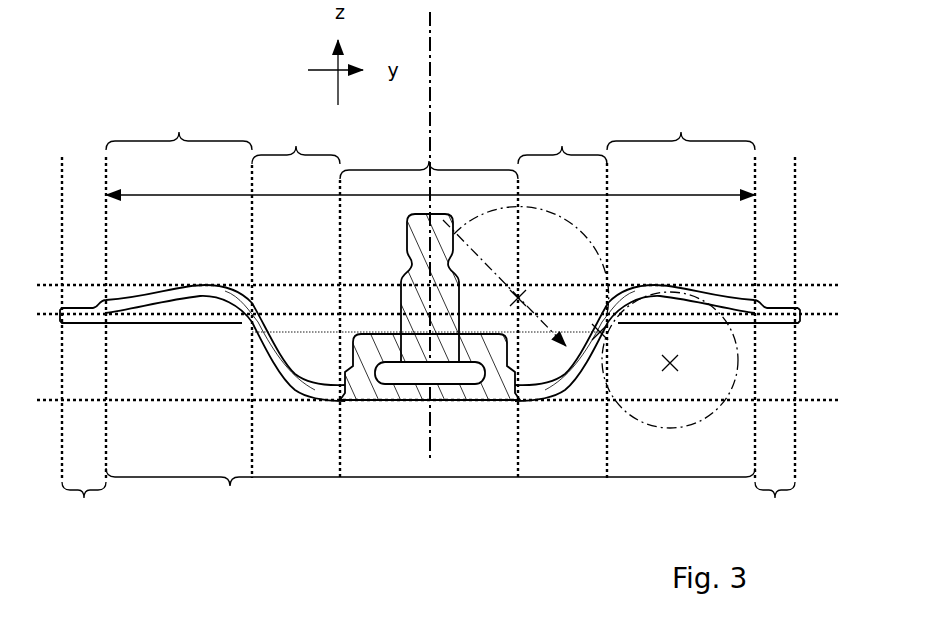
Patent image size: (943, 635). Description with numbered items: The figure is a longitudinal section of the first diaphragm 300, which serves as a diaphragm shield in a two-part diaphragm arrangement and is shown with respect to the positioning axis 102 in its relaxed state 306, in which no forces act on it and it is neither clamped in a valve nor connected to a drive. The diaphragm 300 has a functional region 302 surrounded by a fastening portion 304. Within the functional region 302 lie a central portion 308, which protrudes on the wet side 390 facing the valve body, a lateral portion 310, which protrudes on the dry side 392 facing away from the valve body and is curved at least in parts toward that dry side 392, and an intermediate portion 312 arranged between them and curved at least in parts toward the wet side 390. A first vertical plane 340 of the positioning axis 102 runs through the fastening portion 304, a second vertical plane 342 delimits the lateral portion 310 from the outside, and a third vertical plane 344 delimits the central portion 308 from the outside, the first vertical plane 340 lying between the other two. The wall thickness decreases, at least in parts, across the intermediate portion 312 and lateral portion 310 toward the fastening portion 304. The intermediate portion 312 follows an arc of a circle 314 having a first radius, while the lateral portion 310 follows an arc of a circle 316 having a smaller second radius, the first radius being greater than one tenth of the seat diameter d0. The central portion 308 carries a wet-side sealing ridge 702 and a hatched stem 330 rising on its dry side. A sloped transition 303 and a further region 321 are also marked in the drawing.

The first diaphragm 300 is at (112, 88).
The positioning axis 102 is at (432, 66).
The functional region 302 is at (430, 497).
The membrane slope portion 303 is at (228, 333).
The fastening portion 304 is at (428, 510).
The relaxed state 306 is at (270, 262).
The central portion 308 is at (429, 154).
The lateral portion 310 is at (430, 124).
The intermediate portion 312 is at (562, 135).
The circle 314 is at (532, 218).
The circle 316 is at (690, 430).
The intermediate portion 321 is at (296, 135).
The stem 330 is at (446, 212).
The first vertical plane 340 is at (828, 318).
The second vertical plane 342 is at (813, 283).
The third vertical plane 344 is at (826, 402).
The wet side 390 is at (199, 385).
The dry side 392 is at (730, 105).
The wet-side sealing ridge 702 is at (413, 412).
The seat diameter d0 is at (213, 195).